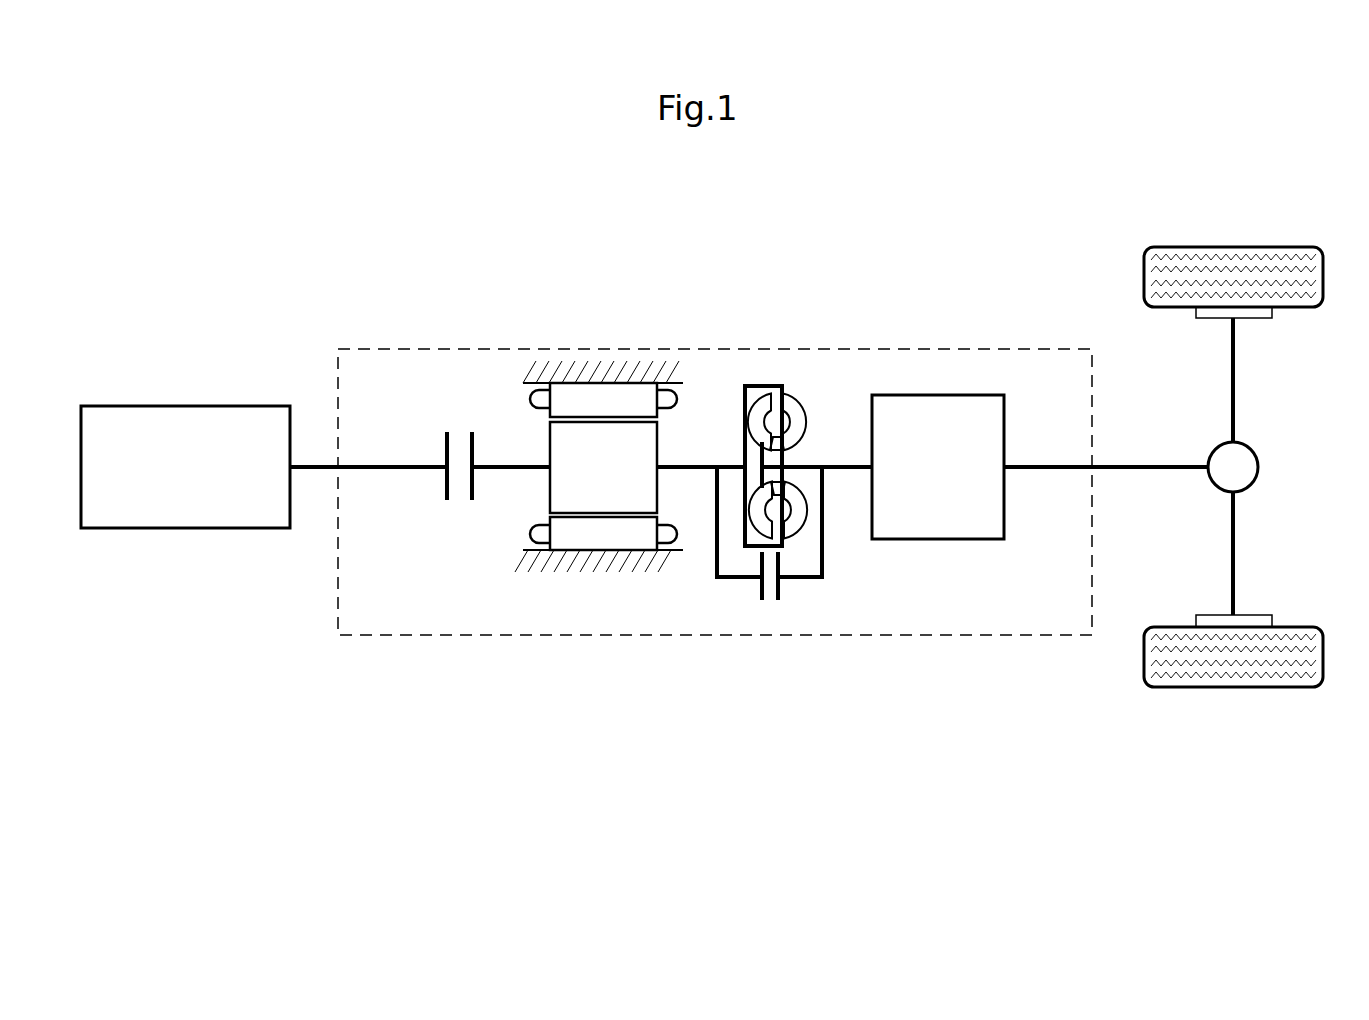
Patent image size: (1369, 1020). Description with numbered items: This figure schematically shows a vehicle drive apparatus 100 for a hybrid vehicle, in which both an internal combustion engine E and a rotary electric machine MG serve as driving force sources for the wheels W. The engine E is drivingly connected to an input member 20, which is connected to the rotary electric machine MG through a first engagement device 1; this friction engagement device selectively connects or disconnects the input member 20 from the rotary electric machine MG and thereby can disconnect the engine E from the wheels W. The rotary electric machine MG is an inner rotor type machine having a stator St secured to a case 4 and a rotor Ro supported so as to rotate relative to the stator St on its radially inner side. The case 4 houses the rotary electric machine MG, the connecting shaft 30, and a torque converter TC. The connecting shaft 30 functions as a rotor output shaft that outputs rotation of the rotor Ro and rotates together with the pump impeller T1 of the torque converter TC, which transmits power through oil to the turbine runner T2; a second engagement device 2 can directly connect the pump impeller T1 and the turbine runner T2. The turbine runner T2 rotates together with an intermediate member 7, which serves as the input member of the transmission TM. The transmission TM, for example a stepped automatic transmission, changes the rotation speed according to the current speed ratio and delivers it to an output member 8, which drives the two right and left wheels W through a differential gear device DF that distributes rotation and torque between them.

The vehicle drive apparatus 100 is at (415, 349).
The internal combustion engine E is at (180, 406).
The input member 20 is at (363, 467).
The first engagement device 1 is at (447, 496).
The rotary electric machine MG is at (572, 396).
The case 4 is at (569, 375).
The stator St is at (558, 400).
The rotor Ro is at (552, 488).
The connecting shaft 30 is at (693, 470).
The torque converter TC is at (793, 473).
The turbine runner T2 is at (755, 422).
The pump impeller T1 is at (805, 522).
The second engagement device 2 is at (783, 593).
The intermediate member 7 is at (833, 467).
The transmission TM is at (941, 395).
The output member 8 is at (1111, 467).
The differential gear device DF is at (1218, 455).
The wheels W is at (1224, 257).